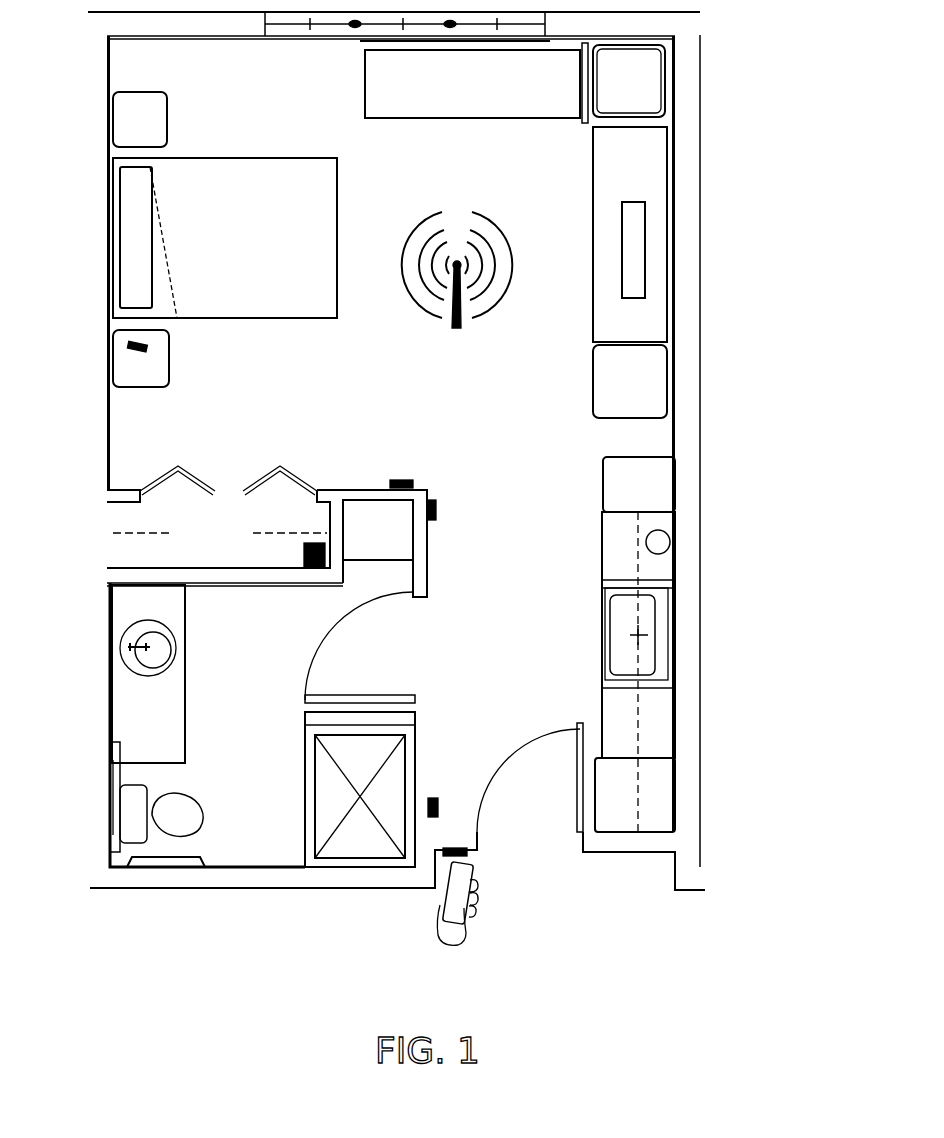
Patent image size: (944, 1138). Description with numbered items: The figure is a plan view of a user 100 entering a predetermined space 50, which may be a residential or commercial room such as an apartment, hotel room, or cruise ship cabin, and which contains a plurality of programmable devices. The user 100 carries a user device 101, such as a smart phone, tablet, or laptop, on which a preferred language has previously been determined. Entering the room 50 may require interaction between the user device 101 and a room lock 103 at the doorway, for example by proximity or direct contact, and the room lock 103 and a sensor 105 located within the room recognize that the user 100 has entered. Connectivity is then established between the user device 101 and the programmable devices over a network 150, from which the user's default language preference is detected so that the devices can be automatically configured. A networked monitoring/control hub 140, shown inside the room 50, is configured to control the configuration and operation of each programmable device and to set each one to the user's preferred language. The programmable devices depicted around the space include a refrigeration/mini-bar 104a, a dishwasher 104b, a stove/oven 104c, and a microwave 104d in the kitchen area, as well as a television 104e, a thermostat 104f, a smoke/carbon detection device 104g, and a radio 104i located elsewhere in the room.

The predetermined space 50 is at (398, 417).
The user 100 is at (475, 917).
The user device 101 is at (477, 875).
The room lock 103 is at (447, 857).
The sensor 105 is at (438, 807).
The networked monitoring/control hub 140 is at (300, 557).
The network 150 is at (457, 267).
The refrigeration/mini-bar 104a is at (660, 777).
The dishwasher 104b is at (665, 728).
The stove/oven 104c is at (678, 538).
The microwave 104d is at (660, 478).
The television 104e is at (647, 223).
The thermostat 104f is at (443, 508).
The smoke/carbon detection 104g is at (415, 483).
The radio 104i is at (147, 343).